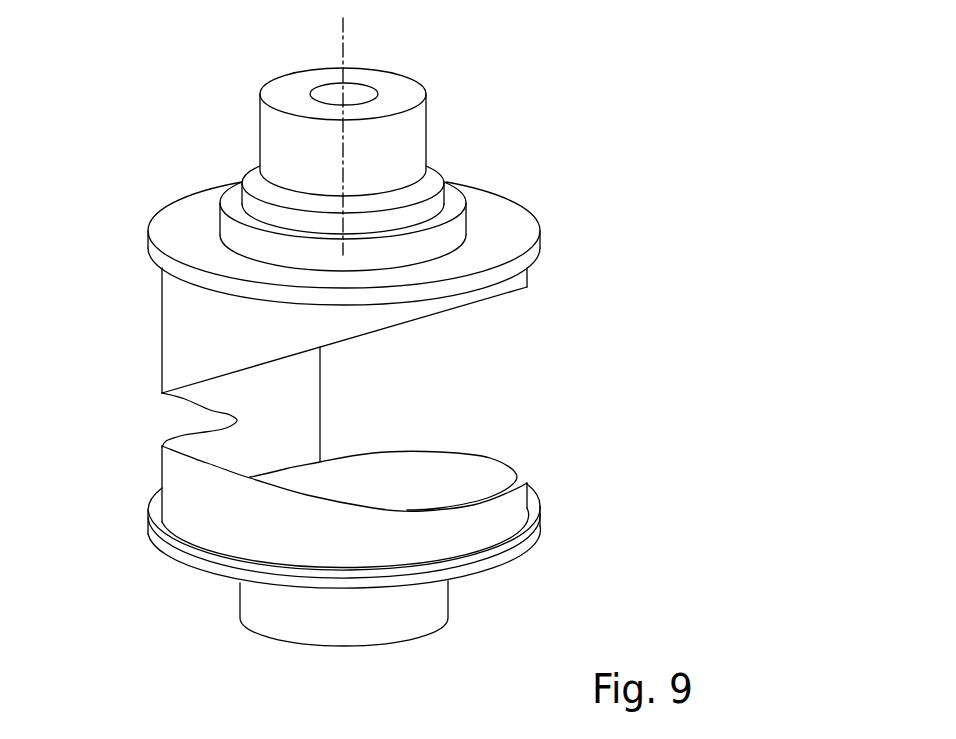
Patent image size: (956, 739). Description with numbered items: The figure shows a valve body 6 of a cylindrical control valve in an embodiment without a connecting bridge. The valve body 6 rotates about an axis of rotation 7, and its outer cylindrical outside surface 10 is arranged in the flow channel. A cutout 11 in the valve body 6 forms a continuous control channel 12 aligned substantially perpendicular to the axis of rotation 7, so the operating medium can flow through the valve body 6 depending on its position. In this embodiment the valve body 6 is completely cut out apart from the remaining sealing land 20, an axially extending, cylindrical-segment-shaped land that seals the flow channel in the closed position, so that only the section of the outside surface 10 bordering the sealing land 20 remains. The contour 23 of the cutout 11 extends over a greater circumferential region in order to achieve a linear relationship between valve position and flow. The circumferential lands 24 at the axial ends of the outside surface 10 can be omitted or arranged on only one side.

The valve body 6 is at (530, 158).
The axis of rotation 7 is at (343, 33).
The outside surface 10 is at (207, 340).
The cutout 11 is at (517, 365).
The control channel 12 is at (526, 441).
The sealing land 20 is at (265, 406).
The contour 23 is at (400, 512).
The circumferential lands 24 is at (136, 233).